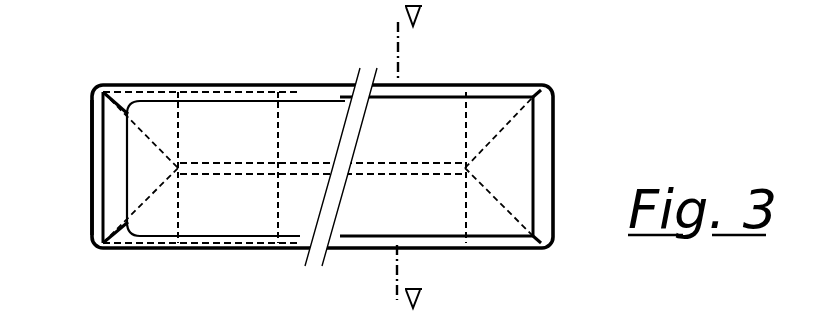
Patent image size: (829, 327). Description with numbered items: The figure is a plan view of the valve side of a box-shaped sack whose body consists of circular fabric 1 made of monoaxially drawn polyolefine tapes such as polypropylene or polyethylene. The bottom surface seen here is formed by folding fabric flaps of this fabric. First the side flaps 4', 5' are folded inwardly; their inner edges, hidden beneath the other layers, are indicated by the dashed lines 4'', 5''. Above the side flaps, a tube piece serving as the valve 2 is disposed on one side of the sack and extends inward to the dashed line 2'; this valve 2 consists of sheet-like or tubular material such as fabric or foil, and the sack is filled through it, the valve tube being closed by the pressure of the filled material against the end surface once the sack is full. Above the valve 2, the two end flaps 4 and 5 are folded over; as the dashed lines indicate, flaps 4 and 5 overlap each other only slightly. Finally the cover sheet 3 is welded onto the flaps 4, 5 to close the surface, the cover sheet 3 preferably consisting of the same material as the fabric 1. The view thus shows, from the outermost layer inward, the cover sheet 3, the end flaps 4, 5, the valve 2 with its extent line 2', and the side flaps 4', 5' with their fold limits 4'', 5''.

The circular fabric 1 is at (242, 86).
The valve 2 is at (84, 167).
The line 2' is at (284, 142).
The cover sheet 3 is at (487, 218).
The fabric flap 4 is at (436, 61).
The side flap 4' is at (576, 166).
The dashed line 4'' is at (435, 167).
The fabric flap 5 is at (434, 268).
The side flap 5' is at (74, 160).
The dashed line 5'' is at (236, 141).